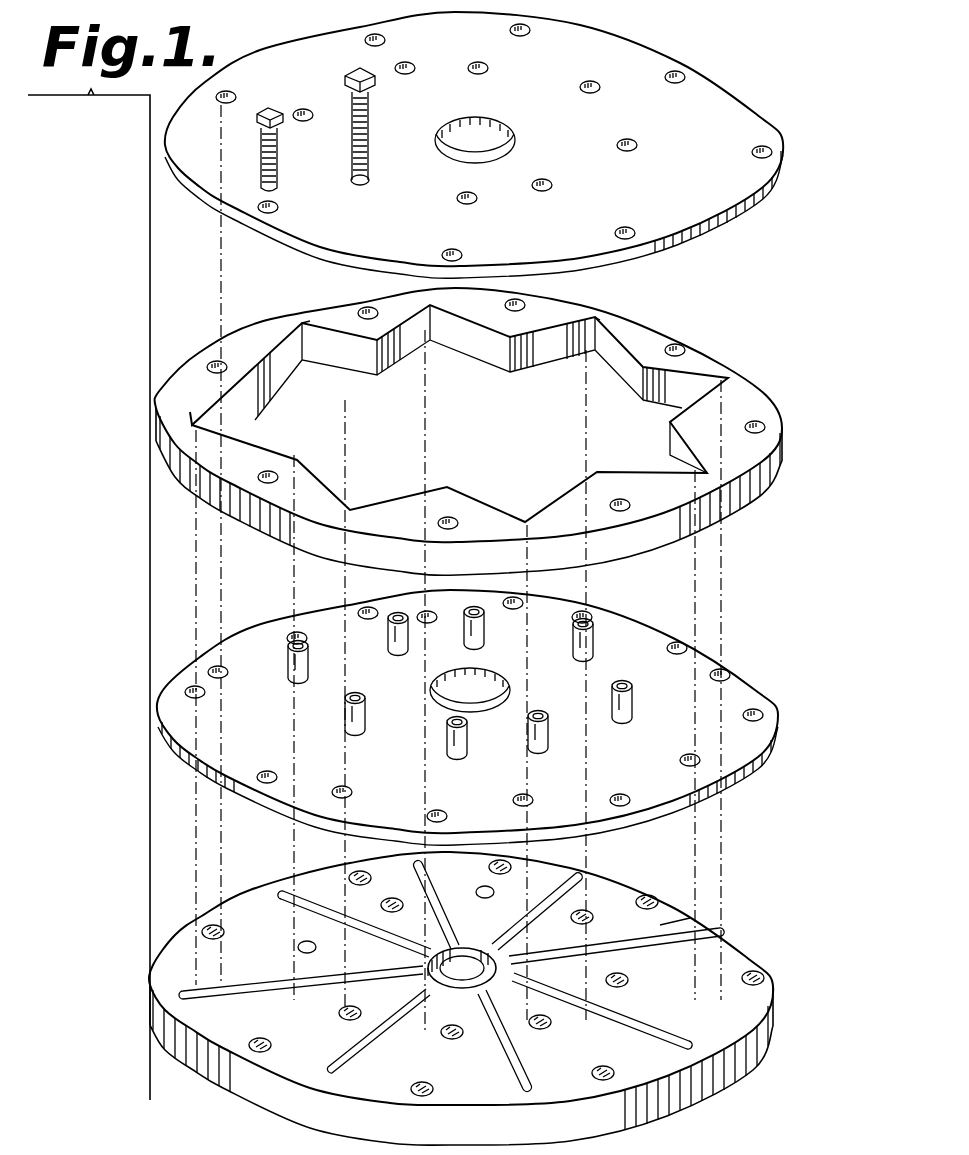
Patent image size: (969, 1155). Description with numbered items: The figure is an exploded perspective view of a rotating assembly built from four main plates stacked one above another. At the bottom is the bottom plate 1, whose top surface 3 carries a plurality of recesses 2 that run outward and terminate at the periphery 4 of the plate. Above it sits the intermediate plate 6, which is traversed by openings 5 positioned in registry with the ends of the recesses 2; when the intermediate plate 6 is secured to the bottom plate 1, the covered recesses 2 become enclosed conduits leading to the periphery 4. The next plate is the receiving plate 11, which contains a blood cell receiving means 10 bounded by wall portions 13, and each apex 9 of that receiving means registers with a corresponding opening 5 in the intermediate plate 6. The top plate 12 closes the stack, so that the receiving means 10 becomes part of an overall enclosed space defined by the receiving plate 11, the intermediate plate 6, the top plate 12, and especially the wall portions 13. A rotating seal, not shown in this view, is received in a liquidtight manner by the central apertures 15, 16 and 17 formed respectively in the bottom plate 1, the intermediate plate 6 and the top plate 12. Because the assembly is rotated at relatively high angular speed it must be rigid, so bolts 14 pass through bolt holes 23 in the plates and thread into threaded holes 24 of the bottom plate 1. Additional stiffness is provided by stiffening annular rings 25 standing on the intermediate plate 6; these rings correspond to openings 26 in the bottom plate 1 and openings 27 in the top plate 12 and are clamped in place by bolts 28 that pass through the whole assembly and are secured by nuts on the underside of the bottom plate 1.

The bottom plate 1 is at (683, 917).
The recesses 2 is at (515, 920).
The top surface 3 is at (712, 1011).
The periphery 4 is at (737, 935).
The openings 5 is at (432, 621).
The intermediate plate 6 is at (760, 678).
The apex 9 is at (296, 324).
The blood cell receiving means 10 is at (318, 400).
The receiving plate 11 is at (748, 392).
The top plate 12 is at (757, 118).
The wall portions 13 is at (473, 343).
The bolts 14 is at (258, 160).
The aperture 15 is at (502, 952).
The aperture 16 is at (500, 686).
The aperture 17 is at (498, 128).
The bolt holes 23 is at (368, 38).
The threaded holes 24 is at (215, 925).
The stiffening annular rings 25 is at (345, 720).
The openings 26 is at (345, 1012).
The openings 27 is at (414, 58).
The bolts 28 is at (348, 78).